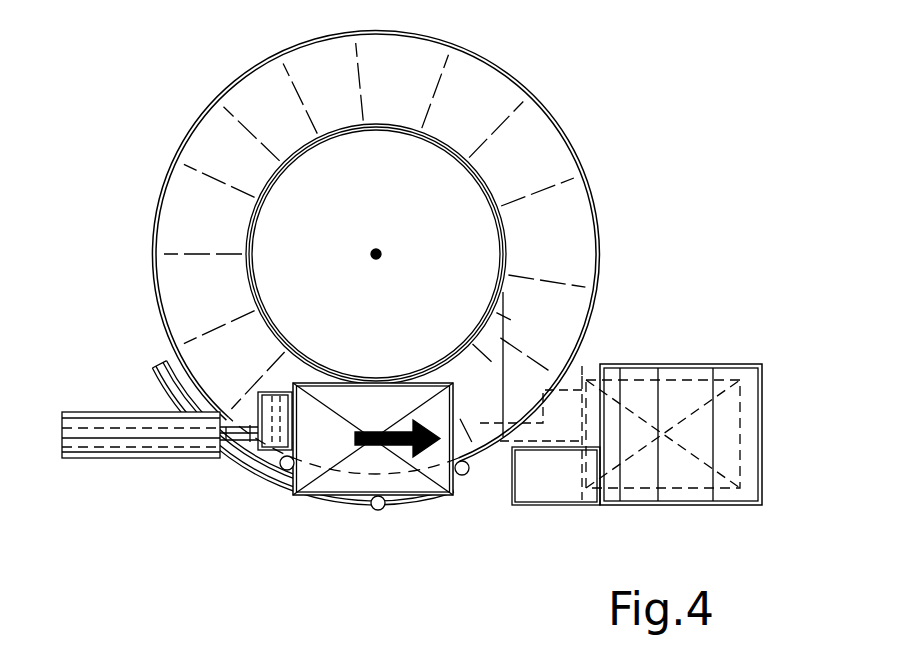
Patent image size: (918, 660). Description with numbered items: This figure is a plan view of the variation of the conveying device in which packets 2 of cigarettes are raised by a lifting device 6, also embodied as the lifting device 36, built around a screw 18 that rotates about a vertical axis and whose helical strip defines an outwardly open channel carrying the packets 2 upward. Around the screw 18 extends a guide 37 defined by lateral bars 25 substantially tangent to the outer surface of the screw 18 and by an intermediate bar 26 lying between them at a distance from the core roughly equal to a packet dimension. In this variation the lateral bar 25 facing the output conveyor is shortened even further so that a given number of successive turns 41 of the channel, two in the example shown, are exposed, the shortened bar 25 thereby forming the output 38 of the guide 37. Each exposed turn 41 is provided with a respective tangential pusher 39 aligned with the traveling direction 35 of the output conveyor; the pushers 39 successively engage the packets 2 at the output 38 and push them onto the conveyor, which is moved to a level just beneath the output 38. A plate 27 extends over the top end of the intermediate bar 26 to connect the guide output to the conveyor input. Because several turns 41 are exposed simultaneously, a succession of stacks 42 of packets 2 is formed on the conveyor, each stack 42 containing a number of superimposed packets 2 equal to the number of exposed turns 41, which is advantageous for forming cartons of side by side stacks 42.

The packet 2 is at (327, 487).
The lifting device 6 is at (605, 203).
The screw 18 is at (580, 162).
The lateral bar 25 is at (172, 352).
The intermediate bar 26 is at (357, 500).
The plate 27 is at (545, 472).
The traveling direction 35 is at (378, 447).
The lifting device 36 is at (157, 193).
The guide 37 is at (235, 484).
The output 38 is at (460, 407).
The pusher 39 is at (125, 435).
The turn 41 is at (520, 133).
The stack 42 is at (746, 412).